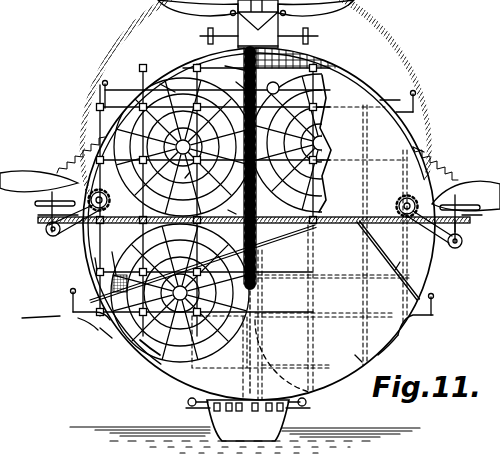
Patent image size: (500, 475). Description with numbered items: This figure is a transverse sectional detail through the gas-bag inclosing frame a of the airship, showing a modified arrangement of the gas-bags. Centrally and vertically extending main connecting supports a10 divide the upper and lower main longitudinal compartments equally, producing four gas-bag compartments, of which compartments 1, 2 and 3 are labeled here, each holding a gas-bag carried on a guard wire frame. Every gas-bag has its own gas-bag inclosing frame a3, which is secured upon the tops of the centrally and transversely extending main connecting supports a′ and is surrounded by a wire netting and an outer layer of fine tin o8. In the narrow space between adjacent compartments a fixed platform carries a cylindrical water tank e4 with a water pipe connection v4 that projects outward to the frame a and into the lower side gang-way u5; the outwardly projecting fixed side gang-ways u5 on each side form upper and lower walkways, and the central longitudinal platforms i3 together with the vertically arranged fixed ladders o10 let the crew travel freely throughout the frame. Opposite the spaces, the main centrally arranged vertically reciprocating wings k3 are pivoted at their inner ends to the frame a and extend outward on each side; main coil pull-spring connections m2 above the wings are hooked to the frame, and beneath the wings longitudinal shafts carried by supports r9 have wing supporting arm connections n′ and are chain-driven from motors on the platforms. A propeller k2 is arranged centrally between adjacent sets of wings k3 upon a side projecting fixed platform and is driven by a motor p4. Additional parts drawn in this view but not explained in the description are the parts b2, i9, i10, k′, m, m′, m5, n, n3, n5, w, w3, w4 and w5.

The gas-bag compartment 3 is at (122, 128).
The gas-bag inclosing frame a is at (145, 343).
The centrally and transversely extending main connecting supports a′ is at (175, 187).
The gas-bag inclosing frame a3 is at (106, 328).
The centrally and vertically extending main connecting supports a10 is at (228, 62).
The car wheel b2 is at (186, 402).
The cylindrical water tank e4 is at (346, 226).
The platform i3 is at (240, 350).
The upper side bar i9 is at (394, 99).
The top tower / mesh i10 is at (320, 67).
The sail bar k′ is at (477, 215).
The propeller k2 is at (38, 202).
The main centrally arranged vertically reciprocating wings k3 is at (38, 175).
The lower frame m is at (352, 356).
The diagonal cable m′ is at (200, 335).
The main coil pull-spring connection m2 is at (428, 150).
The lower post m5 is at (71, 297).
The propeller wing n is at (206, 20).
The wing supporting arm connection n′ is at (312, 32).
The side wheel n3 is at (462, 241).
The wing arm n5 is at (202, 40).
The outer layer of fine tin o8 is at (162, 86).
The vertically arranged fixed ladder o10 is at (231, 206).
The motor p4 is at (460, 215).
The support r9 is at (448, 247).
The side gang-way u5 is at (104, 88).
The water pipe connection v4 is at (393, 272).
The lower bracket arm w is at (72, 312).
The lower right bracket w3 is at (386, 360).
The left bar w4 is at (30, 323).
The side post w5 is at (420, 108).
The gas-bag compartment 1 is at (93, 258).
The gas-bag compartment 2 is at (418, 296).